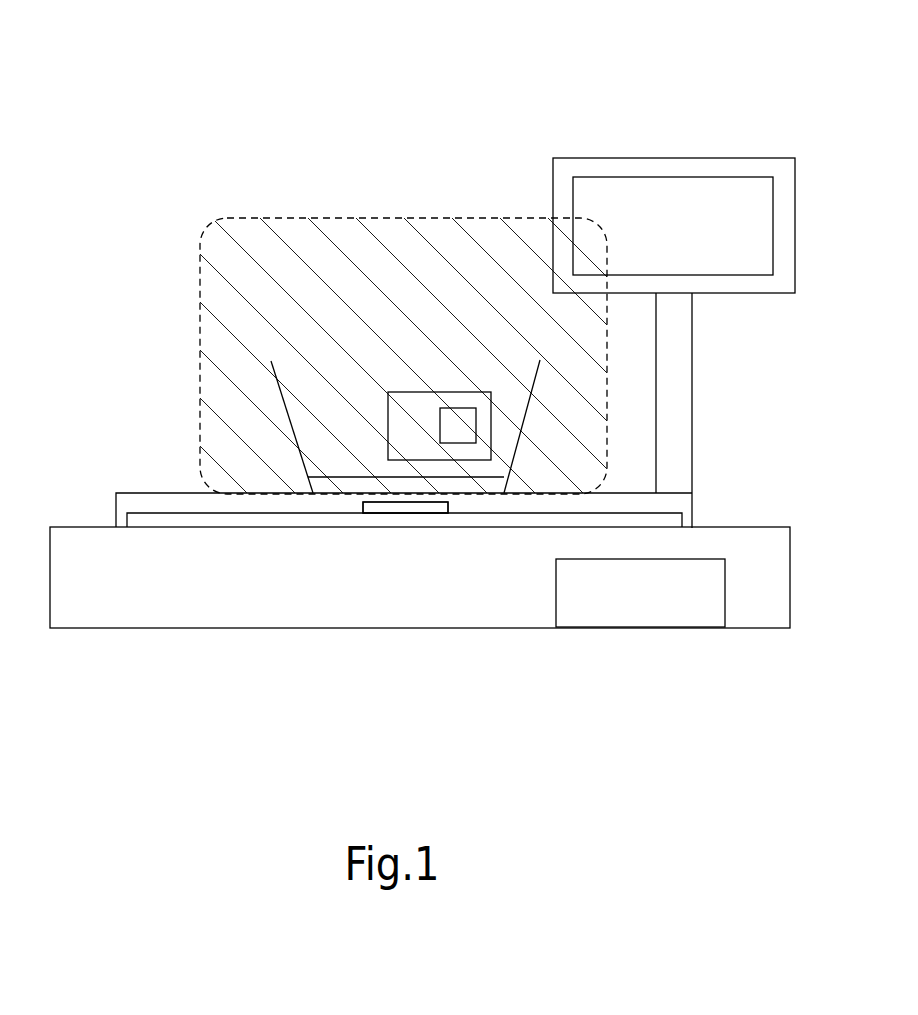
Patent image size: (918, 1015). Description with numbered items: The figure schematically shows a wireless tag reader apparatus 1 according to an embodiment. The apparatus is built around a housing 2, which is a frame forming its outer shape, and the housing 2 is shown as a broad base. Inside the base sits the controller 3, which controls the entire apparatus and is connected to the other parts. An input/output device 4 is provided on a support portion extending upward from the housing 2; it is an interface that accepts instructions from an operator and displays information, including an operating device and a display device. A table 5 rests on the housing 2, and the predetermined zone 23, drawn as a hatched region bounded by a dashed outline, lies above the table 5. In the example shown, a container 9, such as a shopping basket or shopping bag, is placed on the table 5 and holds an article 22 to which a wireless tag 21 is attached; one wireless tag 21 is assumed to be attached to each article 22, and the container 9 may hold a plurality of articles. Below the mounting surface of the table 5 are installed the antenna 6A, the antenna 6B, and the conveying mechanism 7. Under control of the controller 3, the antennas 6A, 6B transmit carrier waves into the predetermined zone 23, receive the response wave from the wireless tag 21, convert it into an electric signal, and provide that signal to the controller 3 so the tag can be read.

The wireless tag reader apparatus 1 is at (440, 76).
The housing 2 is at (746, 528).
The controller 3 is at (556, 592).
The input/output device 4 is at (677, 158).
The table 5 is at (570, 493).
The antenna 6A is at (400, 507).
The antenna 6B is at (405, 507).
The conveying mechanism 7 is at (243, 520).
The container 9 is at (535, 386).
The wireless tag 21 is at (463, 408).
The article 22 is at (404, 392).
The predetermined zone 23 is at (249, 218).